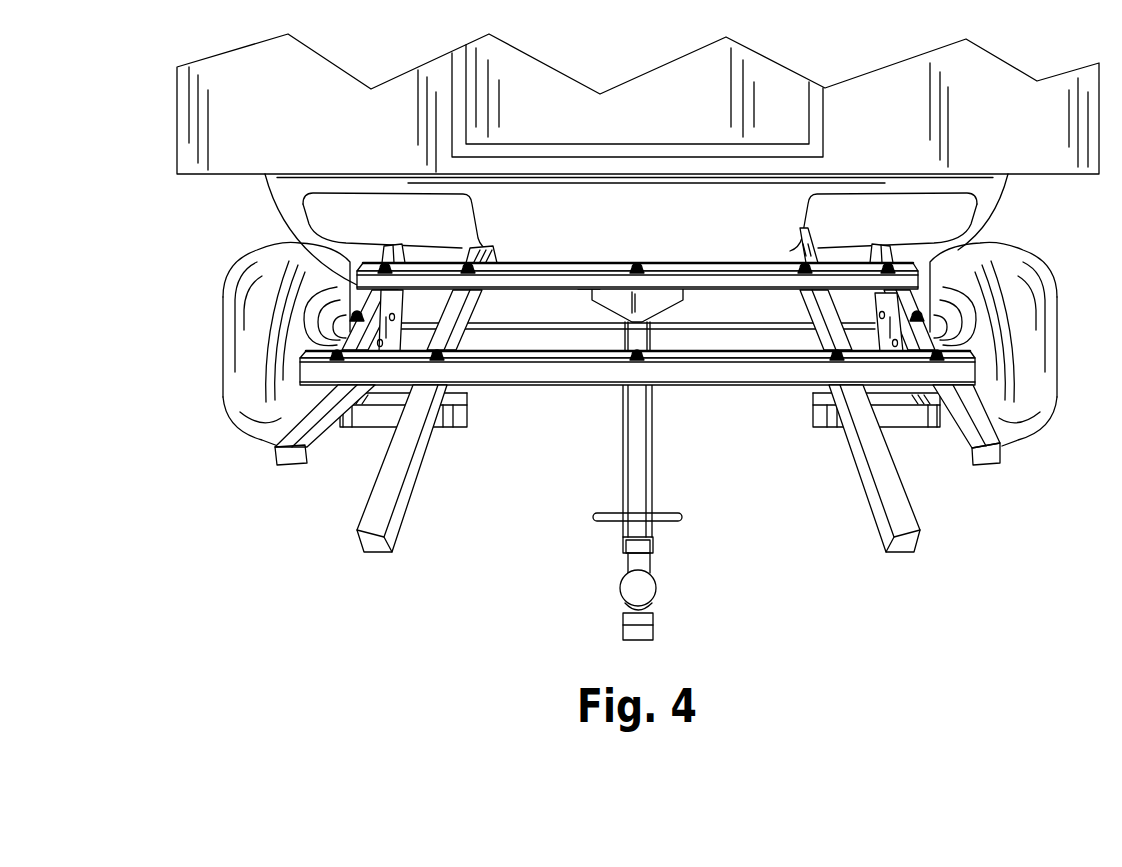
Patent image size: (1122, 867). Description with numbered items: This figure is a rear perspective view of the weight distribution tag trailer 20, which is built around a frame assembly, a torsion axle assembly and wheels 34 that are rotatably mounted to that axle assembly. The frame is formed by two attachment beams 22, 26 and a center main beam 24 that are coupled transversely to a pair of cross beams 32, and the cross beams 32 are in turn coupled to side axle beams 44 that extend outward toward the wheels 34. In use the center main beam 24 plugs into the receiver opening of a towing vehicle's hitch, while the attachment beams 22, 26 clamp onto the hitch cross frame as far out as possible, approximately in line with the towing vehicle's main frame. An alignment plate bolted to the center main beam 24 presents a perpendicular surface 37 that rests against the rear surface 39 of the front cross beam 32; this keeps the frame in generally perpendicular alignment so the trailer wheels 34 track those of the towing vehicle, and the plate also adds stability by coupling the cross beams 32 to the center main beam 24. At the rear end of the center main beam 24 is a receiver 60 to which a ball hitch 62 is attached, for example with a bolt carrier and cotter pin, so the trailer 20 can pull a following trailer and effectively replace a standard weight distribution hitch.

The weight distribution tag trailer 20 is at (205, 283).
The attachment beam 22 is at (378, 541).
The center main beam 24 is at (638, 478).
The attachment beam 26 is at (893, 555).
The cross beam 32 is at (515, 268).
The wheel 34 is at (248, 400).
The perpendicular surface 37 is at (655, 288).
The rear surface 39 is at (585, 290).
The side axle beam 44 is at (285, 460).
The receiver 60 is at (642, 527).
The ball hitch 62 is at (643, 593).